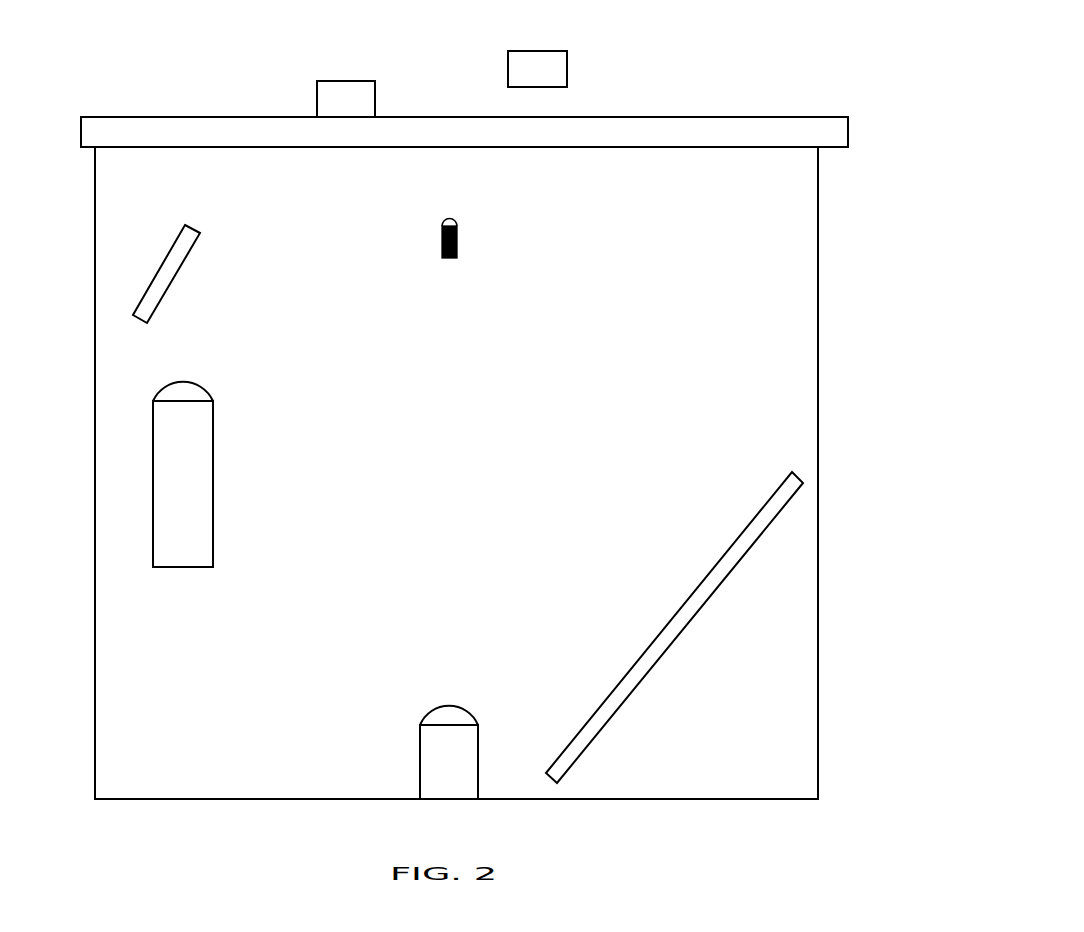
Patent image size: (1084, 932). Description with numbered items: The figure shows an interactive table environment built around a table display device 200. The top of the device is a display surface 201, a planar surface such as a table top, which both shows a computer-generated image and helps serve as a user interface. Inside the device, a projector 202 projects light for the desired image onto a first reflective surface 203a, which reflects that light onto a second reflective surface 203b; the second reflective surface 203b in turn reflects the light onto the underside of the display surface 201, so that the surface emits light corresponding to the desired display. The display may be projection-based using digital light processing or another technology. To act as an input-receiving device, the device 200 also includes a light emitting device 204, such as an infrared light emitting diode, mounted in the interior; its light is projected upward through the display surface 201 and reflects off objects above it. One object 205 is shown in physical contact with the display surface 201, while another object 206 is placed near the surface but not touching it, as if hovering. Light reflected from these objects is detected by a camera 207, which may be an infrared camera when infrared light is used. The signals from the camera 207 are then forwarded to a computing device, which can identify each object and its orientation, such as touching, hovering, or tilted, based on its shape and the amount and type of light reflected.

The table display device 200 is at (690, 40).
The display surface 201 is at (154, 117).
The projector 202 is at (153, 477).
The first reflective surface 203a is at (158, 268).
The second reflective surface 203b is at (680, 632).
The light emitting device 204 is at (458, 225).
The object 205 is at (345, 81).
The object 206 is at (543, 51).
The camera 207 is at (420, 725).